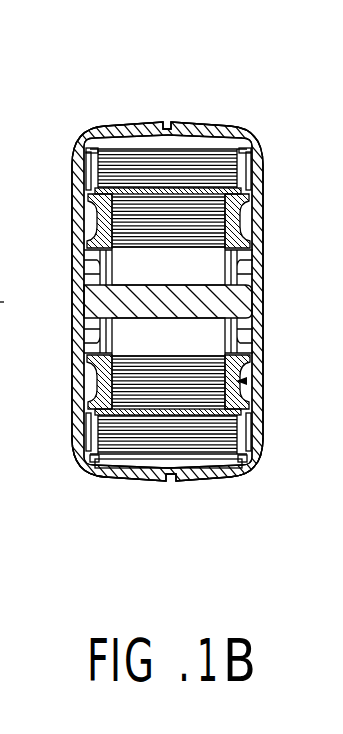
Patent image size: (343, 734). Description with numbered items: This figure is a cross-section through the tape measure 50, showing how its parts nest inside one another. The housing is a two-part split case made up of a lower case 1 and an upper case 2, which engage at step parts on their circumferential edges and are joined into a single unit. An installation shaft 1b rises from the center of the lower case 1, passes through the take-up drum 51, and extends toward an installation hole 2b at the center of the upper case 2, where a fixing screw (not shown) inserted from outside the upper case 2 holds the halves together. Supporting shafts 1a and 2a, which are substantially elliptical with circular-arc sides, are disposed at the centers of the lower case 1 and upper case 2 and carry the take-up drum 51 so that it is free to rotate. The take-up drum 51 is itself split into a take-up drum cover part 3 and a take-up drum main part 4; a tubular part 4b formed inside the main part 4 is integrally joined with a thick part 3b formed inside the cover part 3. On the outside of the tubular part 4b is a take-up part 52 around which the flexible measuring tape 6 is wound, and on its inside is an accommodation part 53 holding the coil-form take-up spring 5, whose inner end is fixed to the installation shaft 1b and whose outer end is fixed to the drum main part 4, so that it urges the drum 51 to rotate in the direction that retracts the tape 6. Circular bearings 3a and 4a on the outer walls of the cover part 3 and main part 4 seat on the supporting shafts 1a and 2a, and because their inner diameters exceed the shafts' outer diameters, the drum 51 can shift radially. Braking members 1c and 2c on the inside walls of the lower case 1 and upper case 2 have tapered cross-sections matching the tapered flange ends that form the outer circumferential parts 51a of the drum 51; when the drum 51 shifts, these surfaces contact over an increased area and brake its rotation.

The tape measure 50 is at (238, 68).
The lower case 1 is at (140, 480).
The supporting shaft 1a is at (96, 268).
The installation shaft 1b is at (240, 300).
The braking member 1c is at (93, 470).
The upper case 2 is at (203, 479).
The supporting shaft 2a is at (241, 268).
The installation hole 2b is at (243, 333).
The braking member 2c is at (233, 470).
The take-up drum cover part 3 is at (97, 215).
The bearing 3a is at (93, 343).
The thick part 3b is at (108, 378).
The take-up drum main part 4 is at (238, 222).
The bearing 4a is at (250, 344).
The tubular part 4b is at (176, 440).
The take-up spring 5 is at (150, 233).
The measuring tape 6 is at (183, 158).
The take-up drum 51 is at (245, 389).
The outer circumferential part 51a is at (280, 116).
The take-up part 52 is at (132, 144).
The accommodation part 53 is at (180, 350).